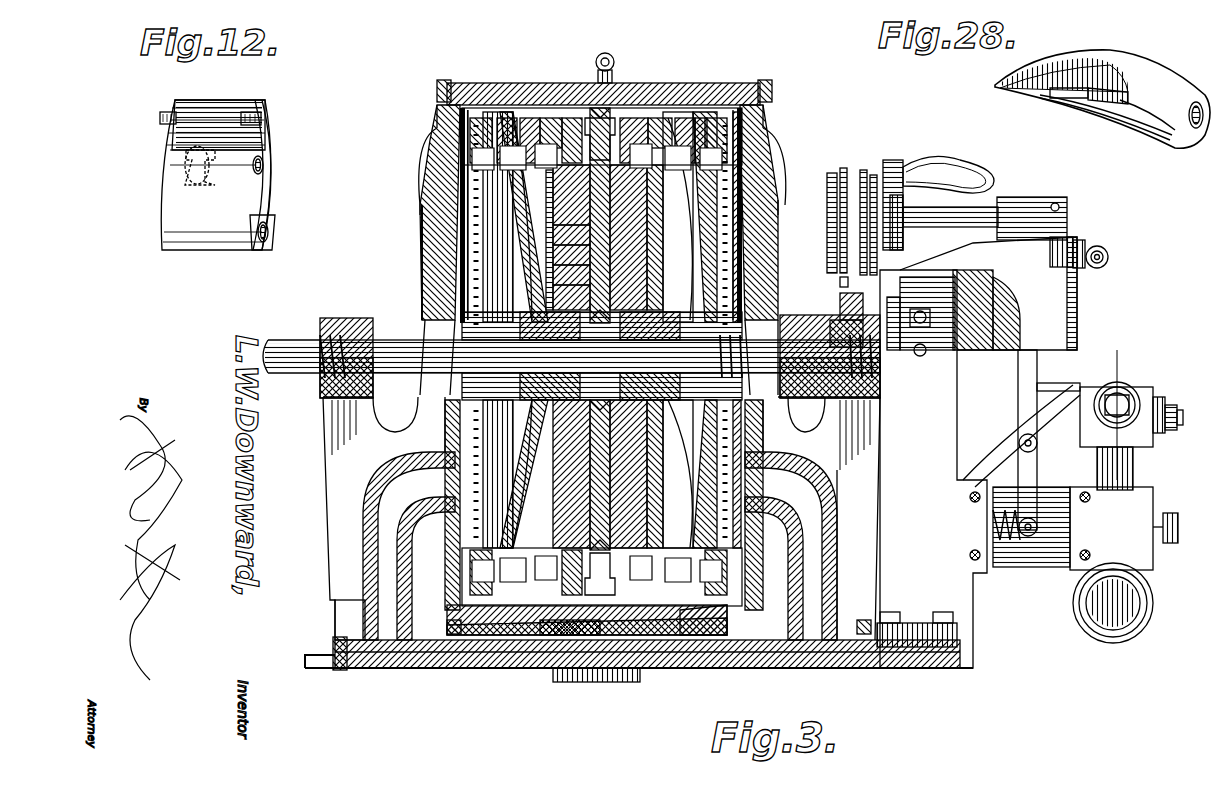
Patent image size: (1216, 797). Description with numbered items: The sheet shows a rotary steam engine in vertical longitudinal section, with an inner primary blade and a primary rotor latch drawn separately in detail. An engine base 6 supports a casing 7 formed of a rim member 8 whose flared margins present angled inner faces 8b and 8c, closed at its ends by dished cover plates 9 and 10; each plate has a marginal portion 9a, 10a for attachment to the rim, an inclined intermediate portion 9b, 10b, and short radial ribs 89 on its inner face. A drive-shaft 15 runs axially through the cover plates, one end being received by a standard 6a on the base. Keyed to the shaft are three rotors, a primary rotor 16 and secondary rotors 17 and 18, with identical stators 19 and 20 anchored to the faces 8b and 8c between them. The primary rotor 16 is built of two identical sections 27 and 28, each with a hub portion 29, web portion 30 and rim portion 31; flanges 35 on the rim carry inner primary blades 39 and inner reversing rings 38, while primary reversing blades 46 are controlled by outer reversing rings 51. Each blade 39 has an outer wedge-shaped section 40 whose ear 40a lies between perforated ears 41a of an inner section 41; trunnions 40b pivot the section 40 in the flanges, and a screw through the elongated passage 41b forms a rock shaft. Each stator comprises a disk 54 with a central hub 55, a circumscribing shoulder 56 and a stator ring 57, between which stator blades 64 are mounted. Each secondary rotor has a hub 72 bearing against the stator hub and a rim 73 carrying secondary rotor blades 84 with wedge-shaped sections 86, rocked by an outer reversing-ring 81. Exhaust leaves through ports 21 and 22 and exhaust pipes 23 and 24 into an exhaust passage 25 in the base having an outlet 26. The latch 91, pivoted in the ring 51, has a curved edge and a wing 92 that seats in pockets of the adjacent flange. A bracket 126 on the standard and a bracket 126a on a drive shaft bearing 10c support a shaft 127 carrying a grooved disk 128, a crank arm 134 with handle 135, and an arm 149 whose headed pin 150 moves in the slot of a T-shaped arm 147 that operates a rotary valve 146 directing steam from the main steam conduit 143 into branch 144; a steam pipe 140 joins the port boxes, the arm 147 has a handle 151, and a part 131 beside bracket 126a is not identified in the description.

In FIG. 3, the engine base 6 is at (520, 660).
In FIG. 3, the standard 6a is at (932, 469).
In FIG. 3, the casing 7 is at (432, 236).
In FIG. 3, the rim member 8 is at (628, 85).
In FIG. 3, the inner face 8b is at (490, 640).
In FIG. 3, the inner face 8c is at (700, 640).
In FIG. 3, the cover plate 9 is at (430, 283).
In FIG. 3, the marginal portion 9a is at (436, 110).
In FIG. 3, the inclined intermediate portion 9b is at (425, 150).
In FIG. 3, the cover plate 10 is at (768, 165).
In FIG. 3, the marginal portion 10a is at (765, 112).
In FIG. 3, the inclined intermediate portion 10b is at (790, 140).
In FIG. 3, the drive shaft bearing 10c is at (878, 438).
In FIG. 3, the drive-shaft 15 is at (300, 368).
In FIG. 3, the primary rotor 16 is at (546, 295).
In FIG. 3, the secondary rotor 17 is at (490, 258).
In FIG. 3, the secondary rotor 18 is at (700, 283).
In FIG. 3, the stator 19 is at (455, 212).
In FIG. 3, the stator 20 is at (720, 245).
In FIG. 3, the exhaust port 21 is at (411, 520).
In FIG. 3, the exhaust port 22 is at (791, 520).
In FIG. 3, the exhaust pipe 23 is at (362, 555).
In FIG. 3, the exhaust pipe 24 is at (845, 567).
In FIG. 3, the exhaust passage 25 is at (430, 650).
In FIG. 3, the outlet 26 is at (840, 288).
In FIG. 3, the rotor section 27 is at (588, 420).
In FIG. 3, the rotor section 28 is at (616, 318).
In FIG. 3, the hub portion 29 is at (630, 398).
In FIG. 3, the web portion 30 is at (571, 249).
In FIG. 3, the rim portion 31 is at (628, 200).
In FIG. 3, the flange 35 is at (580, 108).
In FIG. 3, the inner reversing rings 38 is at (650, 108).
In FIG. 12, the inner primary blades 39 is at (243, 205).
In FIG. 3, the inner primary blades 39 is at (612, 118).
In FIG. 12, the outer wedge-shaped section 40 is at (232, 107).
In FIG. 12, the ear 40a is at (205, 165).
In FIG. 12, the trunnions 40b is at (160, 119).
In FIG. 12, the inner section 41 is at (178, 215).
In FIG. 12, the perforated ears 41a is at (172, 168).
In FIG. 12, the elongated passage 41b is at (258, 229).
In FIG. 3, the primary reversing blades 46 is at (545, 108).
In FIG. 3, the outer reversing rings 51 is at (556, 100).
In FIG. 3, the disk 54 is at (548, 279).
In FIG. 3, the central hub 55 is at (546, 313).
In FIG. 3, the circumscribing shoulder 56 is at (571, 203).
In FIG. 3, the stator ring 57 is at (500, 108).
In FIG. 3, the stator blades 64 is at (530, 100).
In FIG. 3, the hub 72 is at (425, 403).
In FIG. 3, the rim 73 is at (440, 186).
In FIG. 3, the outer reversing-ring 81 is at (460, 85).
In FIG. 3, the secondary rotor blades 84 is at (765, 152).
In FIG. 3, the blade section 86 is at (563, 661).
In FIG. 3, the ribs 89 is at (440, 132).
In FIG. 28, the latch 91 is at (1118, 68).
In FIG. 28, the wing 92 is at (1092, 101).
In FIG. 3, the bracket 126 is at (965, 288).
In FIG. 3, the bracket 126a is at (858, 170).
In FIG. 3, the shaft 127 is at (1010, 215).
In FIG. 3, the peripherally grooved disk 128 is at (905, 178).
In FIG. 3, the plate 131 is at (835, 175).
In FIG. 3, the crank arm 134 is at (905, 210).
In FIG. 3, the handle 135 is at (990, 180).
In FIG. 3, the steam pipe 140 is at (605, 52).
In FIG. 3, the main steam conduit 143 is at (1145, 620).
In FIG. 3, the branch 144 is at (1125, 398).
In FIG. 3, the rotary valve 146 is at (1165, 445).
In FIG. 3, the T-shaped arm 147 is at (1080, 305).
In FIG. 3, the arm 149 is at (1068, 240).
In FIG. 3, the headed pin 150 is at (1090, 248).
In FIG. 3, the handle 151 is at (1108, 255).